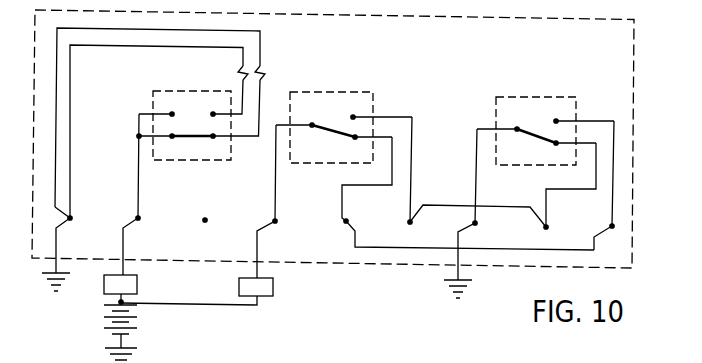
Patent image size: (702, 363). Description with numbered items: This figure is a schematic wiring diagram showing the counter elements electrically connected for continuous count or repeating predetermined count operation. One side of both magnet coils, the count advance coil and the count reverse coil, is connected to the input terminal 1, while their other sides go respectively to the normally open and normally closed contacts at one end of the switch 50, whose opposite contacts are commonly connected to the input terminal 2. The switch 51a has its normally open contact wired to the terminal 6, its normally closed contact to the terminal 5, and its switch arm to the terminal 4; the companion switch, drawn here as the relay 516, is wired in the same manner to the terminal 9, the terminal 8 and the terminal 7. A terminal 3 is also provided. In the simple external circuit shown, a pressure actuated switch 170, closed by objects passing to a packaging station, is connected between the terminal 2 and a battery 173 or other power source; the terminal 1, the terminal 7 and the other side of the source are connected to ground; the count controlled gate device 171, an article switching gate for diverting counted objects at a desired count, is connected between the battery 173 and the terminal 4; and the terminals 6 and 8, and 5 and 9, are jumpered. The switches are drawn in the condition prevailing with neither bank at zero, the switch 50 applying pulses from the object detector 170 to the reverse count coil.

The input terminal No. 1 is at (62, 249).
The input terminal No. 2 is at (138, 194).
The terminal No. 3 is at (211, 223).
The terminal No. 4 is at (273, 201).
The terminal No. 5 is at (462, 193).
The terminal No. 6 is at (471, 175).
The terminal No. 7 is at (466, 213).
The terminal No. 8 is at (570, 190).
The terminal No. 9 is at (609, 185).
The switch 50 is at (164, 160).
The switch 51a is at (363, 92).
The relay contact 516 is at (540, 97).
The pressure actuated switch 170 is at (137, 285).
The count controlled device 171 is at (273, 287).
The battery 173 is at (133, 324).